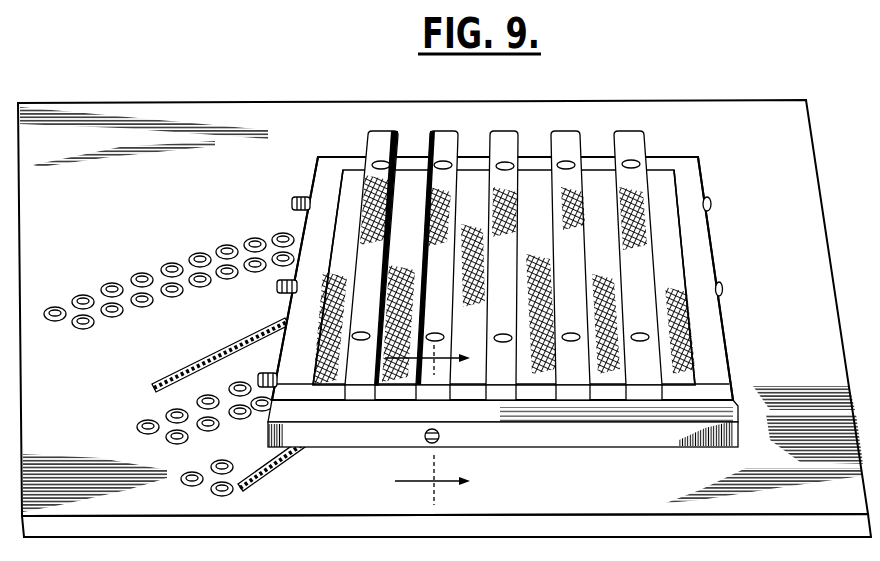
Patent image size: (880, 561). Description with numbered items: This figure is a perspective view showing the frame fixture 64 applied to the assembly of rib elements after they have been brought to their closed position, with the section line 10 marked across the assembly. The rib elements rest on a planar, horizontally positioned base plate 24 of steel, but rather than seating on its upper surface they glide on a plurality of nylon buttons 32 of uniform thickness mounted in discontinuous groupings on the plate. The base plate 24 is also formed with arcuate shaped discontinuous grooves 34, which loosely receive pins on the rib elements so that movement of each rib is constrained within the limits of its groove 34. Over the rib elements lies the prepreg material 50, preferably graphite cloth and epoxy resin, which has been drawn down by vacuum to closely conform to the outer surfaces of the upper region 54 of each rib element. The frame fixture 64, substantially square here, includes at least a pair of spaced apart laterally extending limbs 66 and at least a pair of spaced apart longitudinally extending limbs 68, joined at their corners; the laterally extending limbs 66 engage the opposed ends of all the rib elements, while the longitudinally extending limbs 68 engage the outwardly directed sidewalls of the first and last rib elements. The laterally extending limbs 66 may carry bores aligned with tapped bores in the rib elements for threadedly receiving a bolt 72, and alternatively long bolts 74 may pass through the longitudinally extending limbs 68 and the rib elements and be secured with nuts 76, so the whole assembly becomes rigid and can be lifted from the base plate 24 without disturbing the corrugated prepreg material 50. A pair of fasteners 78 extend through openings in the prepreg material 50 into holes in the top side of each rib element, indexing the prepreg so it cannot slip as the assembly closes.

The section line 10- 10 is at (434, 421).
The base plate 24 is at (203, 96).
The nylon buttons 32 is at (88, 326).
The arcuate shaped discontinuous grooves 34 is at (197, 365).
The prepreg material 50 is at (444, 130).
The upper region 54 is at (360, 393).
The frame fixture 64 is at (690, 168).
The laterally extending limbs 66 is at (536, 163).
The longitudinally extending limbs 68 is at (330, 182).
The bolt 72 is at (436, 440).
The long bolts 74 is at (720, 287).
The nuts 76 is at (290, 280).
The fasteners 78 is at (634, 163).